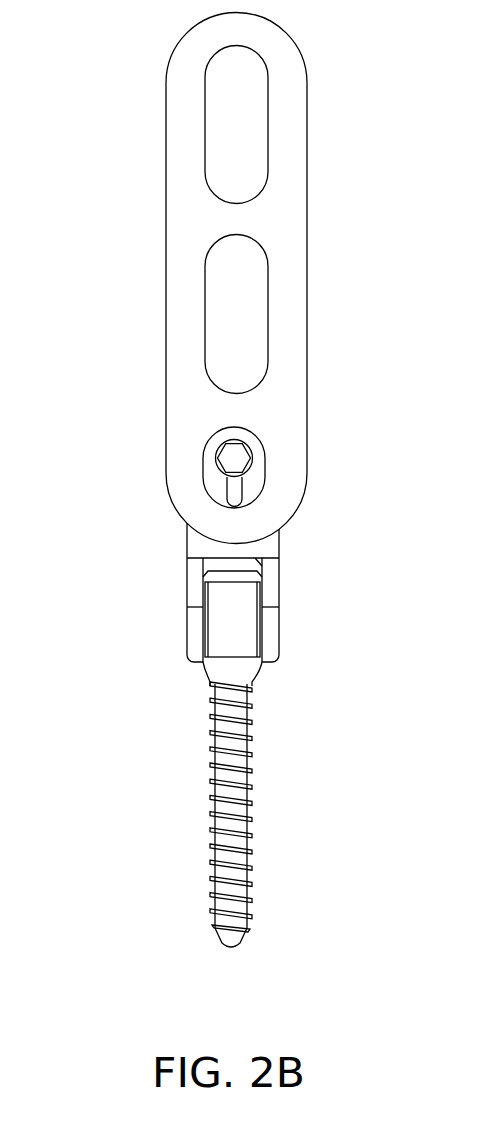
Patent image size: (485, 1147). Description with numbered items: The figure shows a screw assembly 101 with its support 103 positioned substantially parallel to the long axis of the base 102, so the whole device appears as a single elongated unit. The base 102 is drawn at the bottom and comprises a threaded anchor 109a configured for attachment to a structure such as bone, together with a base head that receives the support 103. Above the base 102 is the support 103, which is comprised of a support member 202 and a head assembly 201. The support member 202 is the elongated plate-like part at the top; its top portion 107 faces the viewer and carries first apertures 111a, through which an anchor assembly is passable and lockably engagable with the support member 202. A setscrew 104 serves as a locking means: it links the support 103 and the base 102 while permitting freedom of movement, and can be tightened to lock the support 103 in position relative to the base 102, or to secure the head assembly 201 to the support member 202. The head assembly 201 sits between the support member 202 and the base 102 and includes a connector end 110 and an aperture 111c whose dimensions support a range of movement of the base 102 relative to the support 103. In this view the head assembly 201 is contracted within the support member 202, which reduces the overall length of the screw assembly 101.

The screw assembly 101 is at (88, 520).
The base 102 is at (270, 804).
The support 103 is at (311, 480).
The setscrew 104 is at (205, 470).
The top portion 107 is at (183, 397).
The anchor 109a is at (246, 876).
The connector end 110 is at (193, 632).
The first aperture 111a is at (228, 120).
The aperture 111c is at (218, 566).
The head assembly 201 is at (179, 563).
The support member 202 is at (159, 195).